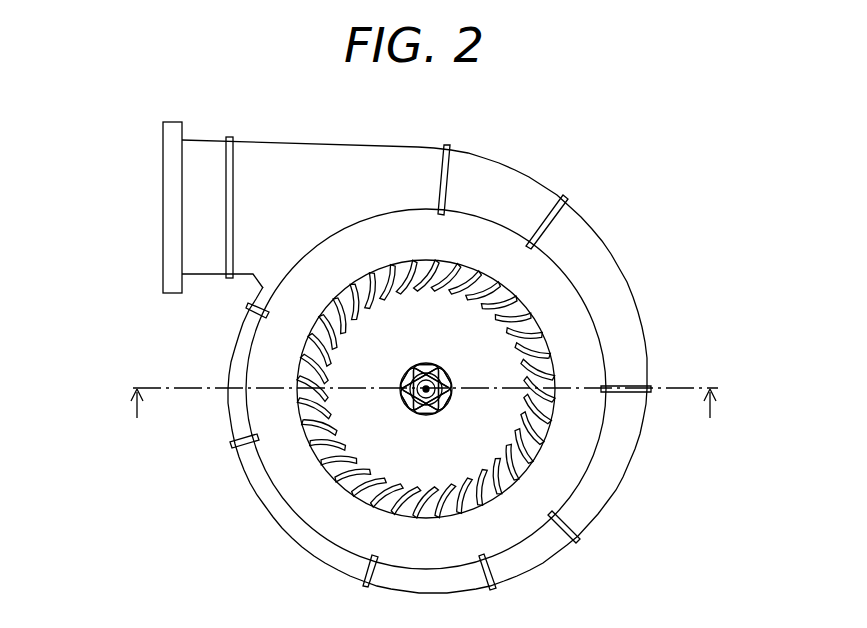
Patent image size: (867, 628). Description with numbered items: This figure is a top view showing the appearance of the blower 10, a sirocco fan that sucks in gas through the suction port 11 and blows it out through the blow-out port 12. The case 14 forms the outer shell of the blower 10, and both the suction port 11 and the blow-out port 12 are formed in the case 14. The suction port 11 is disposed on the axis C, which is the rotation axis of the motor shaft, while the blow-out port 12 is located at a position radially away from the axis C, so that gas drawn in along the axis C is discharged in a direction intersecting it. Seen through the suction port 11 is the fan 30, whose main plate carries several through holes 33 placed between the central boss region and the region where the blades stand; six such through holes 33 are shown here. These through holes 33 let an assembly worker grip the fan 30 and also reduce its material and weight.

The blower 10 is at (690, 153).
The suction port 11 is at (492, 275).
The blow-out port 12 is at (150, 209).
The case 14 is at (330, 167).
The fan 30 is at (497, 427).
The through holes 33 is at (487, 337).
The axis C is at (418, 393).